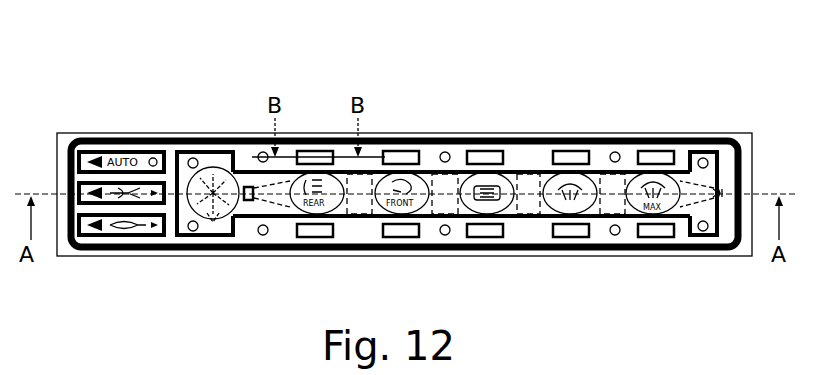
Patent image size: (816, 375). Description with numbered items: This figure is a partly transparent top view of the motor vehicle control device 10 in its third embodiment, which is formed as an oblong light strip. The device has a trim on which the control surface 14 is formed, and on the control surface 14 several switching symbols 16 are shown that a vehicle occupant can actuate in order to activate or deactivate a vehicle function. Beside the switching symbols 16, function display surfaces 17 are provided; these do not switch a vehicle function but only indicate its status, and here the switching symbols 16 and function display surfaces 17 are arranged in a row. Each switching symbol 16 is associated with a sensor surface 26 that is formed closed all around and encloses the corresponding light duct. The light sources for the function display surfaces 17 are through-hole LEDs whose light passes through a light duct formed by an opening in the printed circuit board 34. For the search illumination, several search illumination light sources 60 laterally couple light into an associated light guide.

The motor vehicle control device 10 is at (62, 90).
The control surface 14 is at (177, 128).
The switching symbol 16 is at (469, 165).
The function display surface 17 is at (576, 157).
The sensor surface 26 is at (555, 180).
The printed circuit board 34 is at (718, 157).
The search illumination light source 60 is at (105, 236).